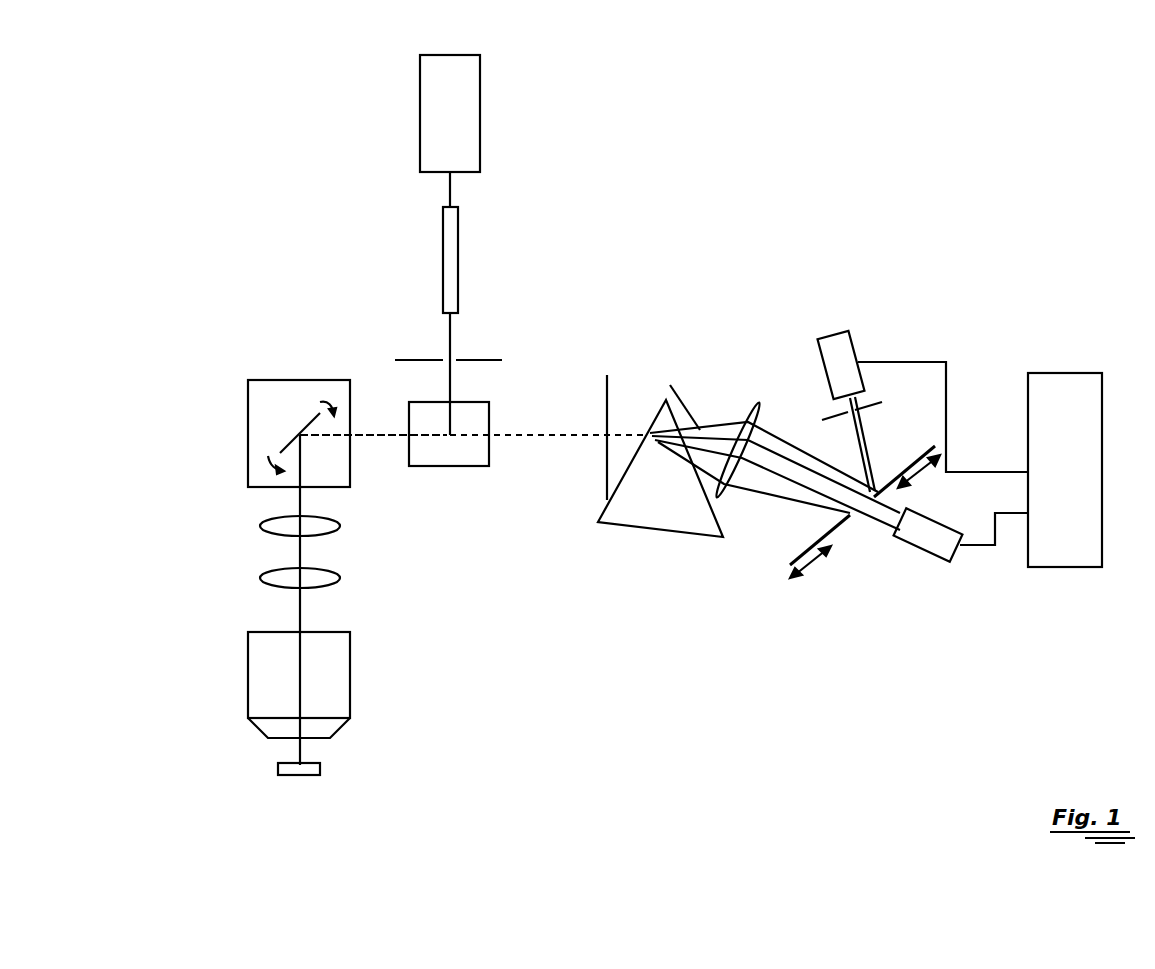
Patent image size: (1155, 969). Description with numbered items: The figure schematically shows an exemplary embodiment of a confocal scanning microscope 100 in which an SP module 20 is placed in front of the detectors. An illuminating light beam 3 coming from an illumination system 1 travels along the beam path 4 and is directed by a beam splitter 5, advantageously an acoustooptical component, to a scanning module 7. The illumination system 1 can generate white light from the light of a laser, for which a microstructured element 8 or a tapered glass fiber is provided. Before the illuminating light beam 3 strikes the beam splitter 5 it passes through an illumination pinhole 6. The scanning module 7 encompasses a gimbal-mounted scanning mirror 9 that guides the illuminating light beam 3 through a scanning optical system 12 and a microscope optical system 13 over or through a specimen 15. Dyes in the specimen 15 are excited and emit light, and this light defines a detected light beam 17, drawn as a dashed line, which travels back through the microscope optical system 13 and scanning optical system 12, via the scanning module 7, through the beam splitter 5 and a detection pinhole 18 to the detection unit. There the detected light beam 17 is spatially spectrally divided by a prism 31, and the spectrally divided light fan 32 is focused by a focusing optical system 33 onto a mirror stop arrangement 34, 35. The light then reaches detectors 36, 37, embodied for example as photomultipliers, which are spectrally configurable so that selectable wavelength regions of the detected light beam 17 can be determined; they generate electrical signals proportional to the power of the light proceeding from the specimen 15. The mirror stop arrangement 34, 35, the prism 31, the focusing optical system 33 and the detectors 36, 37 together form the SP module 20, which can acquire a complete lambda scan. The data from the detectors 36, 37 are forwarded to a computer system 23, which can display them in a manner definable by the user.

The illumination system 1 is at (470, 96).
The illuminating light beam 3 is at (447, 187).
The microstructured element 8 is at (448, 278).
The beam path 4 is at (450, 332).
The confocal scanning microscope 100 is at (516, 328).
The illumination pinhole 6 is at (408, 362).
The scanning module 7 is at (268, 400).
The scanning mirror 9 is at (290, 450).
The detected light beam 17 is at (497, 435).
The beam splitter 5 is at (432, 467).
The scanning optical system 12 is at (285, 522).
The microscope optical system 13 is at (268, 657).
The specimen 15 is at (282, 764).
The detection pinhole 18 is at (608, 395).
The SP module 20 is at (786, 390).
The spectrally divided light fan 32 is at (670, 385).
The prism 31 is at (662, 522).
The focusing optical system 33 is at (718, 497).
The mirror stop arrangement 34 is at (842, 522).
The mirror stop arrangement 35 is at (897, 470).
The detector 36 is at (895, 540).
The detector 37 is at (820, 338).
The computer system 23 is at (1080, 392).